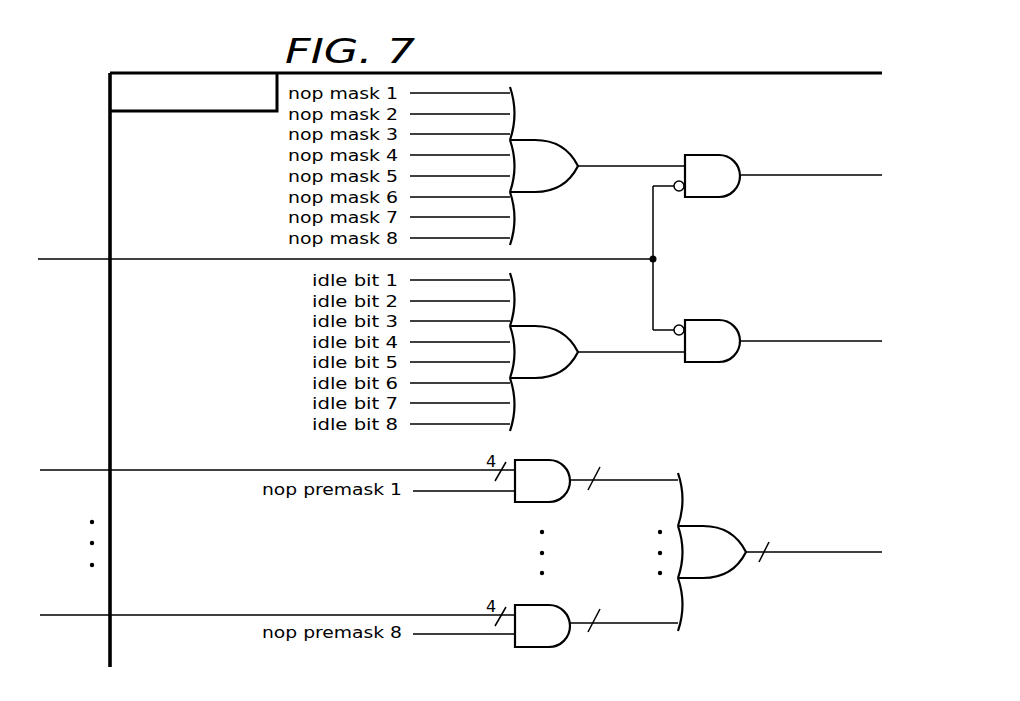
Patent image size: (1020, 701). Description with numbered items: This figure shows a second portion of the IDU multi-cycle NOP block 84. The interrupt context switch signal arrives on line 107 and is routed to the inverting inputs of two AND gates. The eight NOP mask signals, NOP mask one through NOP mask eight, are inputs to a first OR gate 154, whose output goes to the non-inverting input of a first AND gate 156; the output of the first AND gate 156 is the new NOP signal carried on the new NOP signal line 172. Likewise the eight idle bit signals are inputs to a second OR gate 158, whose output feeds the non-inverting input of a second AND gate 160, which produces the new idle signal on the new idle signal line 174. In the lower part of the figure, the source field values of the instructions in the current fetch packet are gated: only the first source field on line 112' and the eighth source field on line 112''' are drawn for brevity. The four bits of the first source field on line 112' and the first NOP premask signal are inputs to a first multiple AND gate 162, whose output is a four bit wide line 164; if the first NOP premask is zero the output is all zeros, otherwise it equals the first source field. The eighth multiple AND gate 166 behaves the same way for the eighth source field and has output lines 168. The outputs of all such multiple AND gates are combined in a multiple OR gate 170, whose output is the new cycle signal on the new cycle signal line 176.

The IDU multi-cycle NOP block 84 is at (111, 142).
The interrupt context switch signal line 107 is at (75, 264).
The src1 line 112' is at (277, 488).
The src 8 line 112''' is at (277, 631).
The first OR gate 154 is at (560, 140).
The first AND gate 156 is at (702, 155).
The second OR gate 158 is at (560, 378).
The second AND gate 160 is at (702, 320).
The first multiple AND gate 162 is at (557, 503).
The four bit wide line 164 is at (627, 480).
The eighth multiple AND gate 166 is at (527, 605).
The output lines 168 is at (629, 622).
The multiple OR gate 170 is at (702, 527).
The new NOP signal line 172 is at (810, 178).
The new idle signal line 174 is at (810, 344).
The new cycle signal line 176 is at (812, 554).